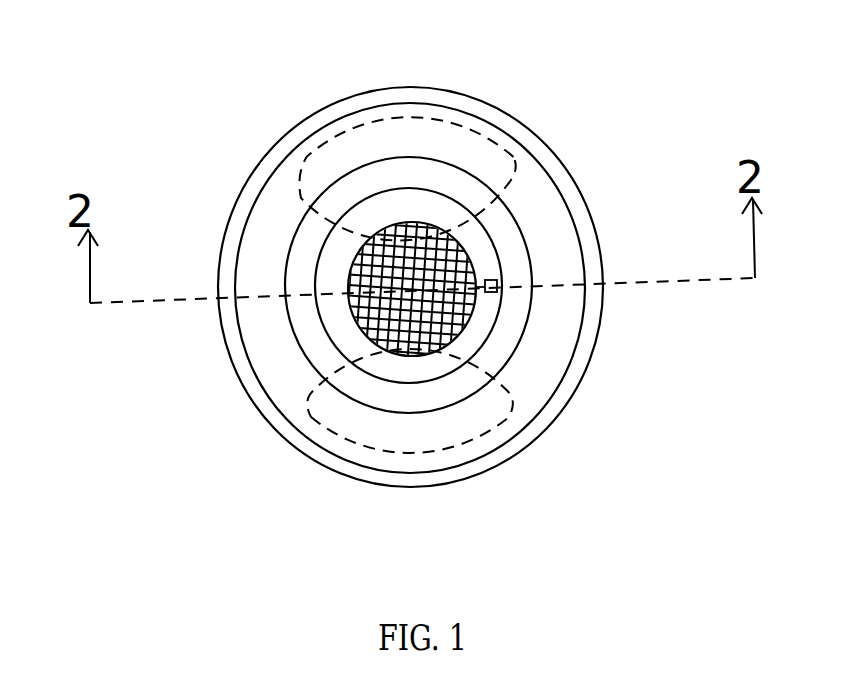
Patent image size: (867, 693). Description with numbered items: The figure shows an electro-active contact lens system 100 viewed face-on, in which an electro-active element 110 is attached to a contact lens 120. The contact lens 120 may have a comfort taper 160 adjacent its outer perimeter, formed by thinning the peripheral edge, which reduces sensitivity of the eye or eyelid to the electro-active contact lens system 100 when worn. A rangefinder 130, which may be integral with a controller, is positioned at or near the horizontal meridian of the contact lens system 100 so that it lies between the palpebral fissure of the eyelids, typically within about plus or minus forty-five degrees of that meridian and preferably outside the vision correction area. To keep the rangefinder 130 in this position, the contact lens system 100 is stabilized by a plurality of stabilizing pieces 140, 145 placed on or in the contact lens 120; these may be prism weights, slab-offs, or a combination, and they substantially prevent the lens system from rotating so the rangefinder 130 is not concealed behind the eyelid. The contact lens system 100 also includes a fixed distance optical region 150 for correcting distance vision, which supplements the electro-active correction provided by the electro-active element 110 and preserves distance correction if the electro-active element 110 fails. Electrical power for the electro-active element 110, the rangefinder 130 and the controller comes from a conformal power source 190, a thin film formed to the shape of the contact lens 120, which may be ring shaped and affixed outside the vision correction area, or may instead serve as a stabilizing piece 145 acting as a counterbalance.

The electro-active contact lens system 100 is at (617, 75).
The electro-active element 110 is at (348, 307).
The contact lens 120 is at (280, 207).
The rangefinder 130 is at (497, 281).
The stabilizing piece 140 is at (500, 155).
The stabilizing piece 145 is at (468, 435).
The fixed distance optical region 150 is at (368, 352).
The comfort taper 160 is at (470, 102).
The conformal power source 190 is at (512, 335).